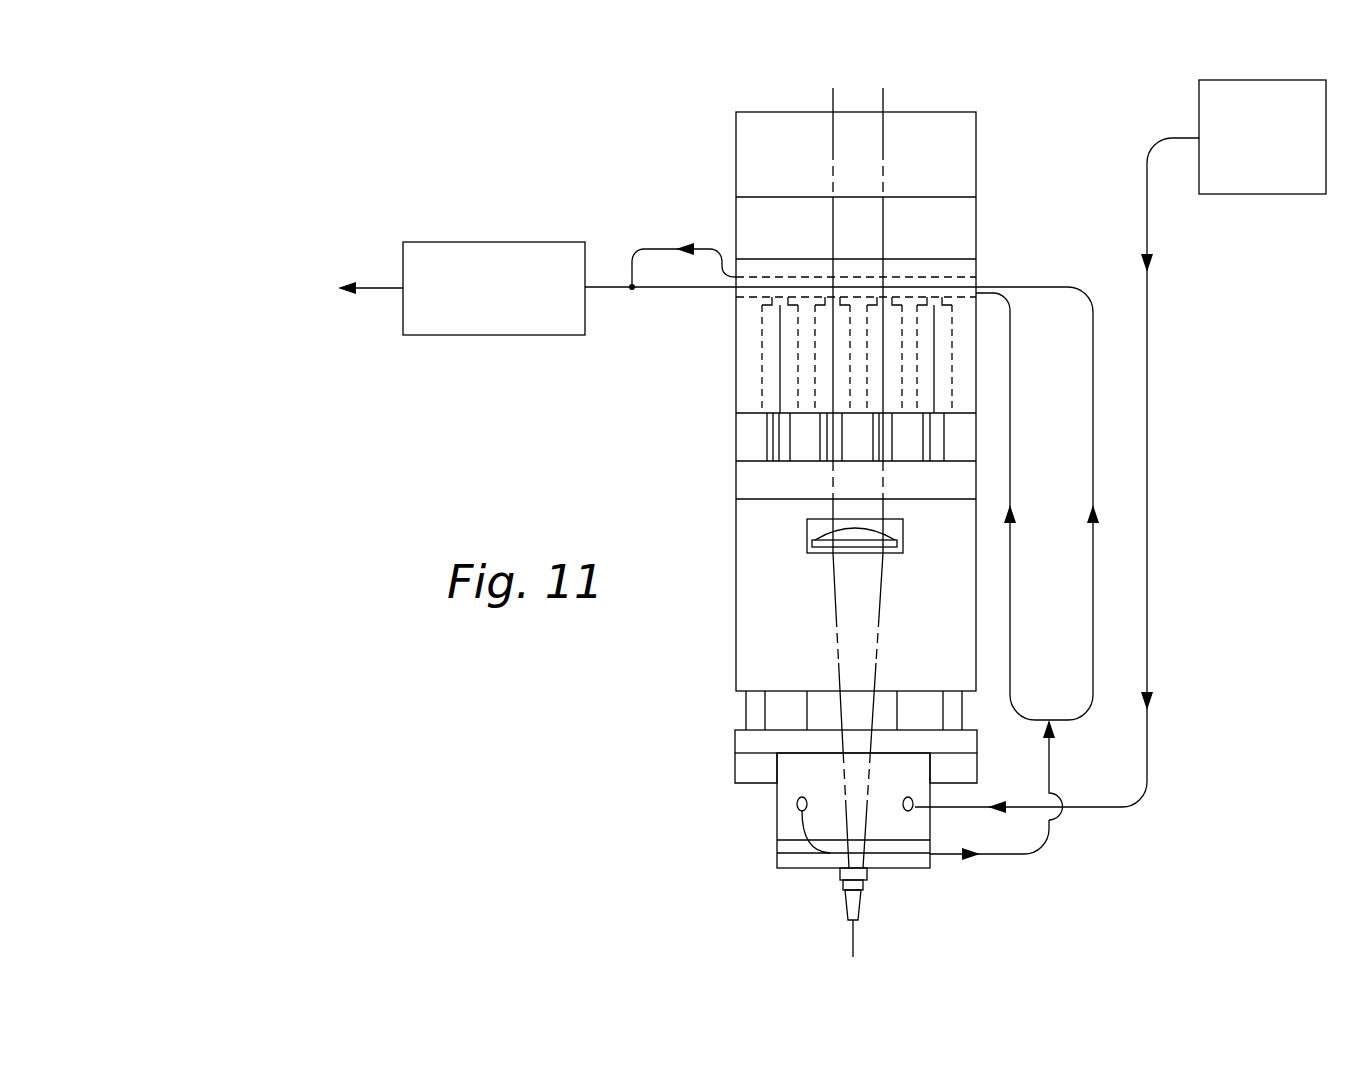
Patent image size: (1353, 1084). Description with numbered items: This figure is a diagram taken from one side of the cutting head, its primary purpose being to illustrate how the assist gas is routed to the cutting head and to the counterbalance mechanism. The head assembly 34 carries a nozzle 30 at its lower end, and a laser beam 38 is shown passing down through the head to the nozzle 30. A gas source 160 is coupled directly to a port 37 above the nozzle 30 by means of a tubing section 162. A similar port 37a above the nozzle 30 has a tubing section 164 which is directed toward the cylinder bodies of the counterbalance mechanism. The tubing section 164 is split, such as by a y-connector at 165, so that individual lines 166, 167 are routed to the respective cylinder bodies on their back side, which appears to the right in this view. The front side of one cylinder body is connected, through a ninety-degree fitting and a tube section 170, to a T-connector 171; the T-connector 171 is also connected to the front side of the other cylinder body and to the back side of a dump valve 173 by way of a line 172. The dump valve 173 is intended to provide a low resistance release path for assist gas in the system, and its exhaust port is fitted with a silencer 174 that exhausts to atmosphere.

The nozzle 30 is at (845, 897).
The nozzle body 34 is at (738, 853).
The port 37 is at (913, 804).
The port 37a is at (797, 808).
The laser beam 38 is at (847, 632).
The gas source 160 is at (1225, 194).
The tubing section 162 is at (1083, 807).
The tubing section 164 is at (998, 856).
The y-connector 165 is at (1052, 724).
The individual line 166 is at (1010, 588).
The individual line 167 is at (1092, 662).
The tube section 170 is at (660, 248).
The T-connector 171 is at (688, 291).
The conduit 172 is at (632, 292).
The dump valve 173 is at (500, 242).
The silencer 174 is at (373, 290).